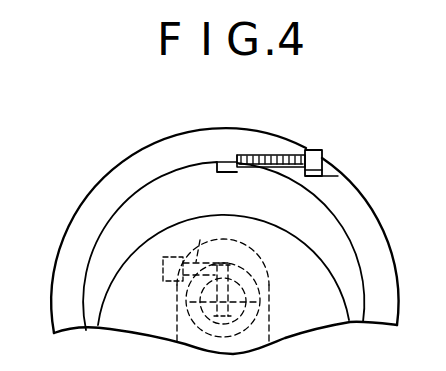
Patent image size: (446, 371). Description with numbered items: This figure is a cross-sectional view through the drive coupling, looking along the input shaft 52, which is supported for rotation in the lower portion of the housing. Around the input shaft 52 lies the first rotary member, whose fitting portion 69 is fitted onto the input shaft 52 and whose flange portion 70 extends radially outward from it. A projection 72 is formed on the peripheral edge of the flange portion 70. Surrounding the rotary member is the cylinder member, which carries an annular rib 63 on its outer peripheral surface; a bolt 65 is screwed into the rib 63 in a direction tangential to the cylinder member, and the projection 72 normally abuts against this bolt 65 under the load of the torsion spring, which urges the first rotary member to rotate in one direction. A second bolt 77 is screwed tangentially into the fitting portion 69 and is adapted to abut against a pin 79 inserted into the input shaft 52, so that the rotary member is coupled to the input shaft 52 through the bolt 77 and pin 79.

The input shaft 52 is at (175, 308).
The annular rib 63 is at (367, 243).
The bolt 65 is at (287, 155).
The fitting portion 69 is at (263, 262).
The flange portion 70 is at (124, 248).
The projection 72 is at (230, 160).
The bolt 77 is at (200, 238).
The pin 79 is at (272, 293).